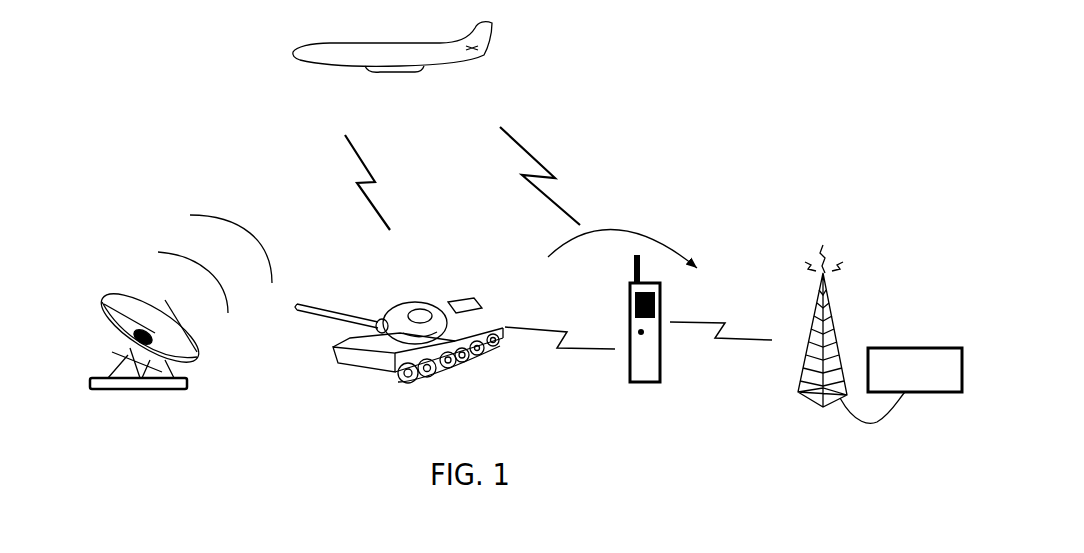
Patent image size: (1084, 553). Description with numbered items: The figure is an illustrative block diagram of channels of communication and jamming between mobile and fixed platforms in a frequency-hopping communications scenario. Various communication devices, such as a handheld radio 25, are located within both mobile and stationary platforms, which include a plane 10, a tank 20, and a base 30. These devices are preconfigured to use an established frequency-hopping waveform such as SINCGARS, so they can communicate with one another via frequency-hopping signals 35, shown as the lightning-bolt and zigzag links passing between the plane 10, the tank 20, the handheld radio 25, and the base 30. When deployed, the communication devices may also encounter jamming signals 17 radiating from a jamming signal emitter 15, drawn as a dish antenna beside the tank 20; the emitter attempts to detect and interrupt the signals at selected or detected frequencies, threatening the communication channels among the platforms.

The plane 10 is at (530, 65).
The jamming signal emitter 15 is at (158, 438).
The jamming signals 17 is at (227, 190).
The tank 20 is at (380, 400).
The handheld radio 25 is at (647, 403).
The base 30 is at (818, 420).
The frequency-hopping signals 35 is at (573, 307).